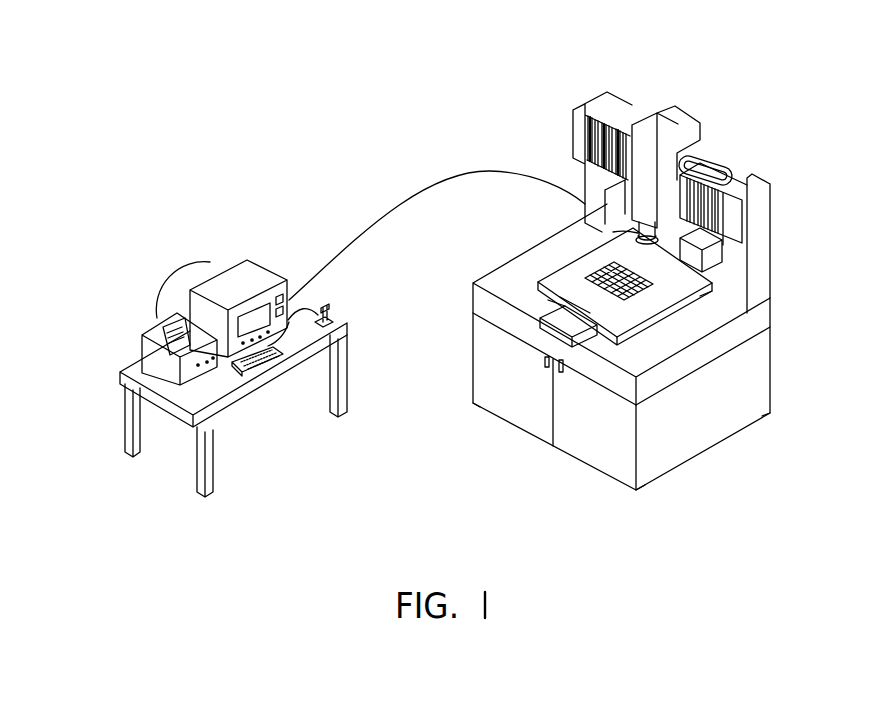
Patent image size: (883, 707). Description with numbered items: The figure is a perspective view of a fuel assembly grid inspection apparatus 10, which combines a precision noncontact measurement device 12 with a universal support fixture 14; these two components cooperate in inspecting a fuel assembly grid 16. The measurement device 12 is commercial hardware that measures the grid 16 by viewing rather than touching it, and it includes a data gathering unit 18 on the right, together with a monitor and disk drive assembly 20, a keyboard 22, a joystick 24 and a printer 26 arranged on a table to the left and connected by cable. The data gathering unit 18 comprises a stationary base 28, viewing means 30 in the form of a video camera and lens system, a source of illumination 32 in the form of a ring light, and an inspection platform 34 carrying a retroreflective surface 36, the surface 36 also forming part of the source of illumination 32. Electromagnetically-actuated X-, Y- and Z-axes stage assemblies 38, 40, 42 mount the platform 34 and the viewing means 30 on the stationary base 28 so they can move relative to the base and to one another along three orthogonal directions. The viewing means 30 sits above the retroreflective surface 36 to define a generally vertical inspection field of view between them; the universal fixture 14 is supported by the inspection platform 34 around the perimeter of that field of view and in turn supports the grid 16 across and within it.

The fuel assembly grid inspection apparatus 10 is at (718, 102).
The precision noncontact measurement device 12 is at (772, 256).
The universal support fixture 14 is at (611, 305).
The fuel assembly grid 16 is at (545, 312).
The data gathering unit 18 is at (743, 330).
The monitor and disk drive assembly 20 is at (264, 264).
The keyboard 22 is at (240, 376).
The joystick 24 is at (330, 320).
The printer 26 is at (150, 355).
The stationary base 28 is at (690, 362).
The viewing means 30 is at (628, 234).
The source of illumination 32 is at (716, 266).
The inspection platform 34 is at (587, 265).
The retroreflective surface 36 is at (650, 300).
The X-axis stage assembly 38 is at (618, 130).
The Y-axis stage assembly 40 is at (545, 330).
The Z-axis stage assembly 42 is at (707, 195).